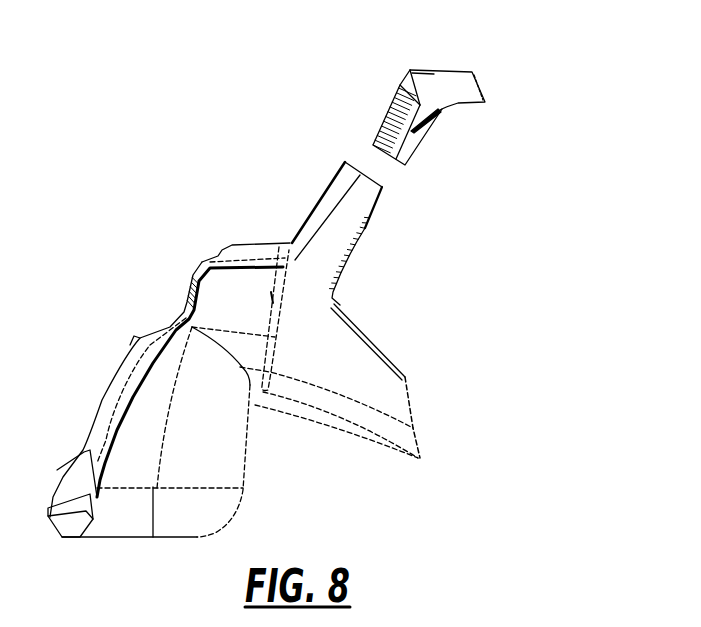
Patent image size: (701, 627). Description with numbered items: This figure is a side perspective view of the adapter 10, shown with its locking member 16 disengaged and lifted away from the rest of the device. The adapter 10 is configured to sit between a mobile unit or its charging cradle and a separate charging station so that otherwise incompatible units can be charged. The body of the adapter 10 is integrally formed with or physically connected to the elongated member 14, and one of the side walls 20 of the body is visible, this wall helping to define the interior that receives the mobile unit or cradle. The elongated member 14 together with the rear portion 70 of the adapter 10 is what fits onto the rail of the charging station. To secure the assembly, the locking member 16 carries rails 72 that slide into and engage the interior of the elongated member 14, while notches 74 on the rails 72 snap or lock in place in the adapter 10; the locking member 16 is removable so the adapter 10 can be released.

The adapter 10 is at (555, 158).
The elongated member 14 is at (318, 203).
The locking member 16 is at (430, 69).
The side wall 20 is at (145, 423).
The rear portion 70 is at (408, 381).
The rails 72 is at (386, 118).
The notches 74 is at (437, 114).